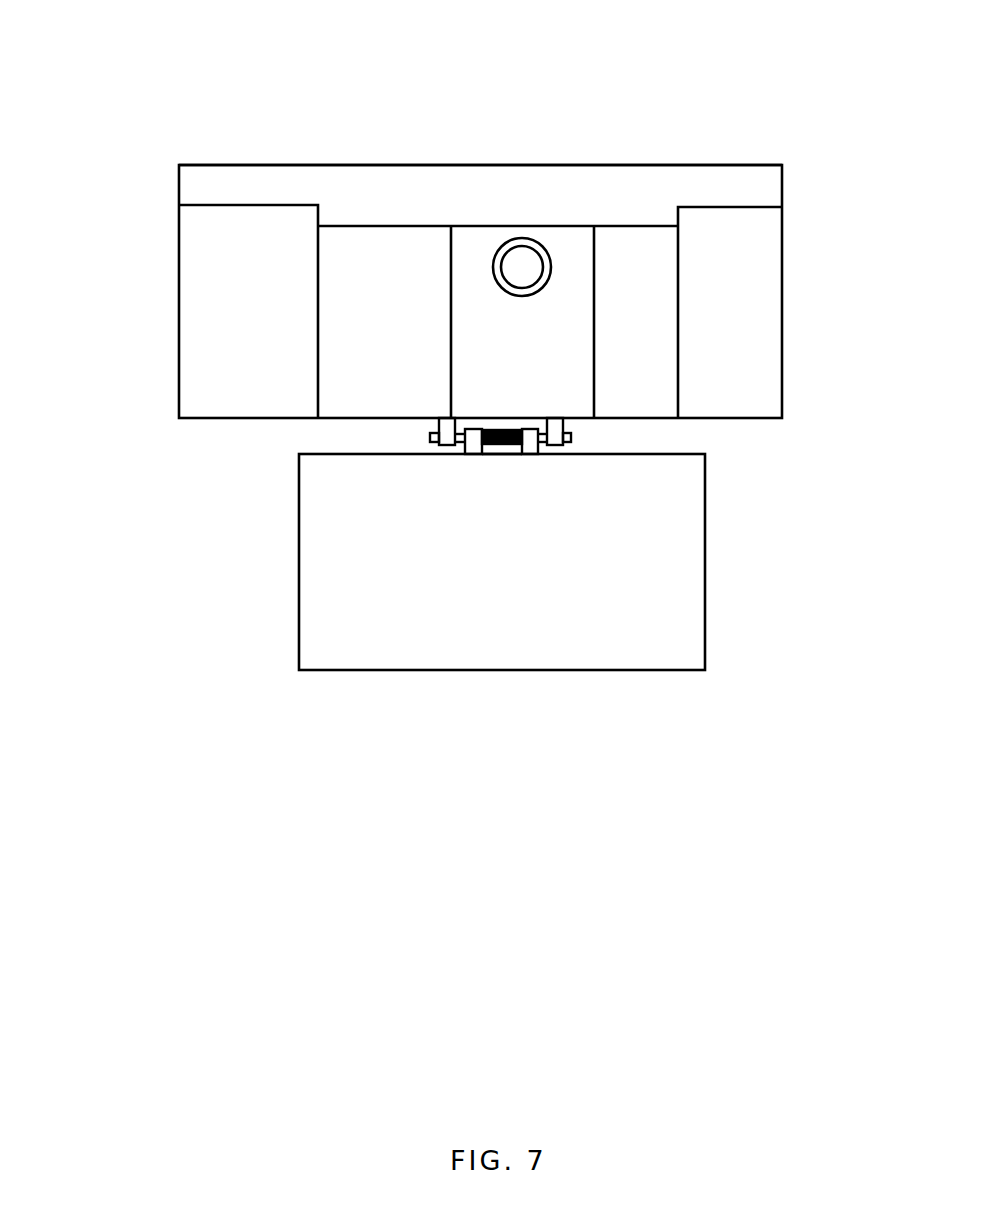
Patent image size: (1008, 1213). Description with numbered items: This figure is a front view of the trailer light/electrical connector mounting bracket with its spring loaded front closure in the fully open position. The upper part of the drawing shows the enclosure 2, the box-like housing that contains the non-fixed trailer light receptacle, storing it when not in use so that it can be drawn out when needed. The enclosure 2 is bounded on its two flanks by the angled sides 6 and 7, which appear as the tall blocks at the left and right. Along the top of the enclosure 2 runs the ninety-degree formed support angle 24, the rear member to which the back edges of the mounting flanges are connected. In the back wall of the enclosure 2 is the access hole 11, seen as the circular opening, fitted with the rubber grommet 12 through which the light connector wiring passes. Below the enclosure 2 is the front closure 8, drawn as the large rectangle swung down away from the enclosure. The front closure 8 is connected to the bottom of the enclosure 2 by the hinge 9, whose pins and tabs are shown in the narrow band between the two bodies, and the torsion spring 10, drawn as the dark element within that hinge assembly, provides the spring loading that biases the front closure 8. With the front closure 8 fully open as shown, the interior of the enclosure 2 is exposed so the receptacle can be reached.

The enclosure 2 is at (380, 297).
The angled side 6 is at (179, 296).
The angled side 7 is at (782, 316).
The front closure 8 is at (299, 597).
The hinge 9 is at (430, 430).
The torsion spring 10 is at (505, 441).
The access hole 11 is at (524, 266).
The rubber grommet 12 is at (518, 238).
The support angle 24 is at (727, 165).